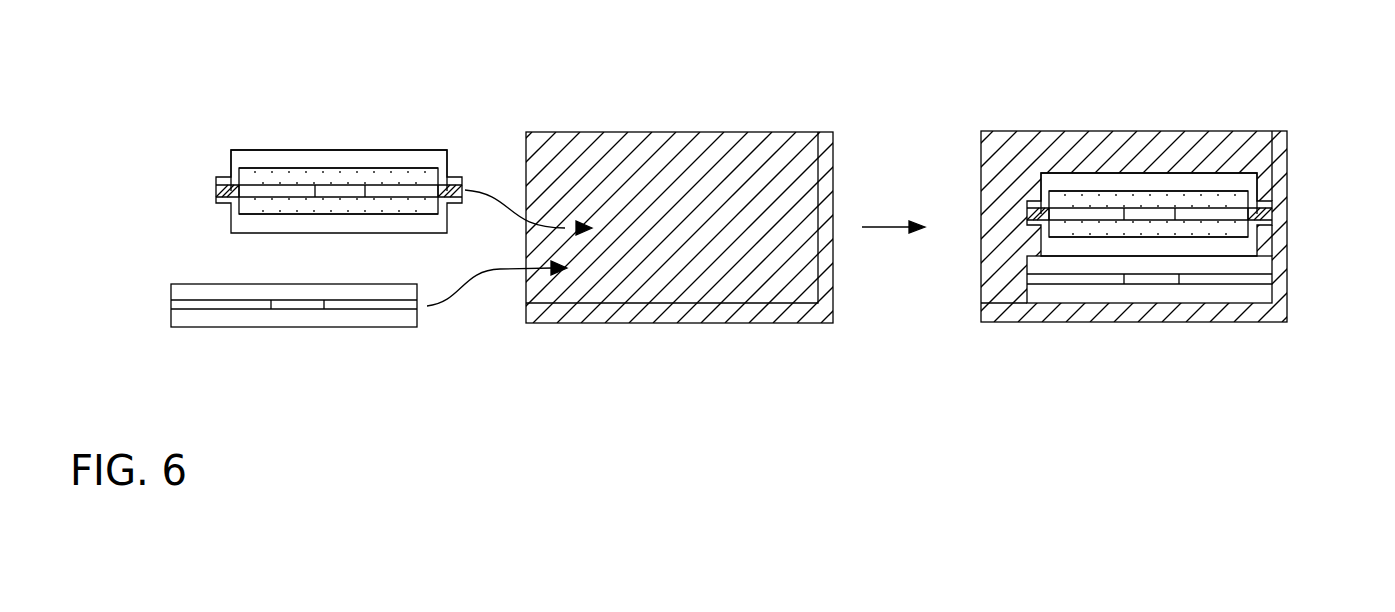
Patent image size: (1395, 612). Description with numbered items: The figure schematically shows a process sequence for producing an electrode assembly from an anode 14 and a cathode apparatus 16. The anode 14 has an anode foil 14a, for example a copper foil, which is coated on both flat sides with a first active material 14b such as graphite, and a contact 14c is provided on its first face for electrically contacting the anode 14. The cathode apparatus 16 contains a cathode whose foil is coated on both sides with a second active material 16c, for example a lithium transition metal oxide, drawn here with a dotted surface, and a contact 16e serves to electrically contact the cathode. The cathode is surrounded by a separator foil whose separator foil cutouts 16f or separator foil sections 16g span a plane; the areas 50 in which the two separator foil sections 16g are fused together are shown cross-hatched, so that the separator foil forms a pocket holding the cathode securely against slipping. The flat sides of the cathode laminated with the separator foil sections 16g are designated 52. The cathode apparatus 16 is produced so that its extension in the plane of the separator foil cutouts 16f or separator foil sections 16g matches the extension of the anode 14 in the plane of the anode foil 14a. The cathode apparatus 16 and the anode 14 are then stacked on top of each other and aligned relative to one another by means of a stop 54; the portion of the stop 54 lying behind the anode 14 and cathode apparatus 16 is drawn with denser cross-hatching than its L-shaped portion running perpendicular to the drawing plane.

The anode 14 is at (190, 352).
The anode foil 14a is at (349, 305).
The first active material 14b is at (387, 290).
The contact 14c is at (289, 305).
The cathode apparatus 16 is at (205, 134).
The second active material 16c is at (406, 174).
The contact 16e is at (325, 192).
The separator foil cutouts 16f is at (253, 157).
The separator foil sections 16g is at (399, 214).
The areas 50 is at (227, 192).
The flat sides of the cathode 52 is at (378, 148).
The stop 54 is at (748, 140).